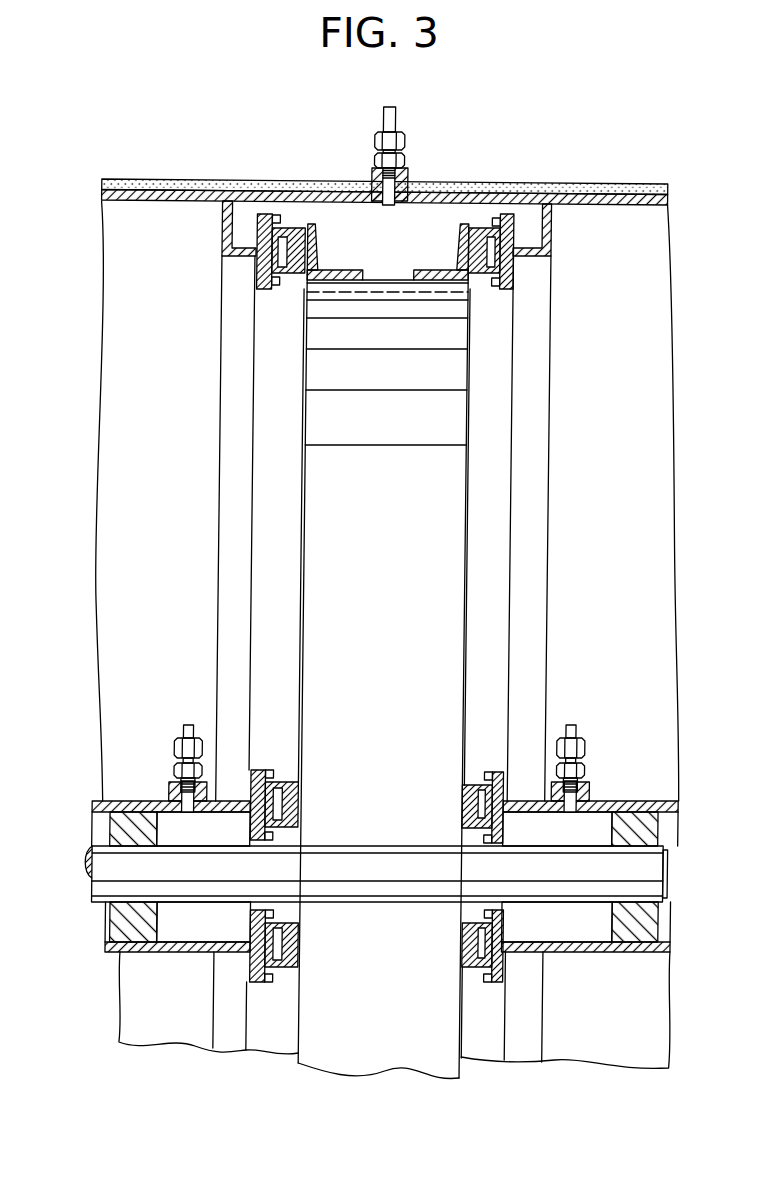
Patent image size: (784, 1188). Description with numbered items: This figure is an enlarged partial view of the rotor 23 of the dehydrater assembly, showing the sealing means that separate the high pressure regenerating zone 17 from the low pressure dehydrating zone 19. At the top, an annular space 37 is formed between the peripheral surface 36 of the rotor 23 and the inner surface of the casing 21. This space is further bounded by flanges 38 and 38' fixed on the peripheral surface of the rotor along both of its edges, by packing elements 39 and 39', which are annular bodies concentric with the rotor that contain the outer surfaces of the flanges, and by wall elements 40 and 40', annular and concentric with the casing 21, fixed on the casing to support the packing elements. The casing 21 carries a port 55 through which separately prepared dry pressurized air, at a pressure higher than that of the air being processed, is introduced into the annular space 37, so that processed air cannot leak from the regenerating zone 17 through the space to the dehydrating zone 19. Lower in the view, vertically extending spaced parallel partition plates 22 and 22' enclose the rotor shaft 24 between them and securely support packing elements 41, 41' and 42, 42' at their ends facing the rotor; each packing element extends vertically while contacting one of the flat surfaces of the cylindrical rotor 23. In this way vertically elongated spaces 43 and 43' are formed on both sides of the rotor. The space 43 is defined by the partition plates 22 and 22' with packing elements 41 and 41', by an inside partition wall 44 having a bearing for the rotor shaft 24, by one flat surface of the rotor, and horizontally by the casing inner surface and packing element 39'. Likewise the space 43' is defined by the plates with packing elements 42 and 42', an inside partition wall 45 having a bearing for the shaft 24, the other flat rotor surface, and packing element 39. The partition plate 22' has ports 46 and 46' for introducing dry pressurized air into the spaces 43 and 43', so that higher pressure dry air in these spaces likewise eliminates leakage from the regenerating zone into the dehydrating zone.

The regenerating zone 17 is at (139, 609).
The dehydrating zone 19 is at (143, 1010).
The casing 21 is at (608, 184).
The partition plate 22 is at (372, 977).
The partition plate 22' is at (385, 779).
The rotor 23 is at (464, 502).
The rotor shaft 24 is at (130, 860).
The peripheral surface 36 is at (389, 278).
The annular space 37 is at (384, 208).
The flange 38 is at (339, 243).
The flange 38' is at (434, 247).
The packing element 39 is at (280, 276).
The packing element 39' is at (491, 276).
The wall element 40 is at (203, 228).
The wall element 40' is at (566, 230).
The packing element 41 is at (482, 969).
The packing element 41' is at (483, 781).
The packing element 42 is at (273, 969).
The packing element 42' is at (274, 779).
The elongated space 43 is at (558, 877).
The elongated space 43' is at (204, 877).
The inside partition wall 44 is at (662, 832).
The inside partition wall 45 is at (120, 828).
The port 46 is at (585, 766).
The port 46' is at (171, 766).
The port 55 is at (367, 177).